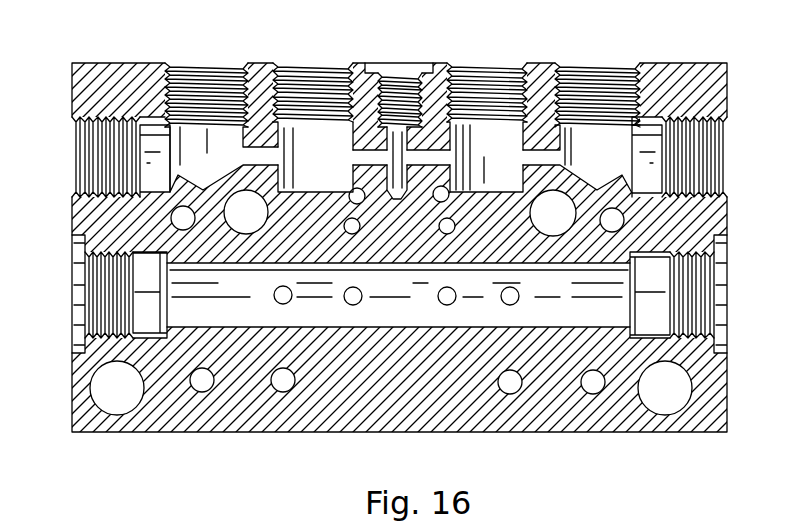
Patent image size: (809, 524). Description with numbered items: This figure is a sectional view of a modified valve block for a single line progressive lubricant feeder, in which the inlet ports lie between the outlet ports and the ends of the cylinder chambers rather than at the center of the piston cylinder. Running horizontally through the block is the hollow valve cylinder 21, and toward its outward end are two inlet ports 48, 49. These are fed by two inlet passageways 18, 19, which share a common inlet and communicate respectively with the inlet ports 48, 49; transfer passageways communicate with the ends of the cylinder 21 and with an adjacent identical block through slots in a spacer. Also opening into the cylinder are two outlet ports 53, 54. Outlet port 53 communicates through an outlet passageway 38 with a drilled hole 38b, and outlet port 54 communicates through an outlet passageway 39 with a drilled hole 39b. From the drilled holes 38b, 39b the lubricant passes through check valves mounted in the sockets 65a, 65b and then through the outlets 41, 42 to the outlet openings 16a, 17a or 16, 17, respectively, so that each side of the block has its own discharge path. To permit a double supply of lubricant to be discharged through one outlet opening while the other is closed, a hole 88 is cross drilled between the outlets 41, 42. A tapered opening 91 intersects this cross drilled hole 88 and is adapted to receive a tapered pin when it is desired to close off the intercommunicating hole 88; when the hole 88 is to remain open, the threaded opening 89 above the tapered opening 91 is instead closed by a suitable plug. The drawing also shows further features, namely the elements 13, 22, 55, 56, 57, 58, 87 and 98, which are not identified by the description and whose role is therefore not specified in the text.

The valve body block 13 is at (720, 434).
The outlet opening 16 is at (188, 80).
The outlet opening 16a is at (92, 132).
The outlet opening 17 is at (583, 82).
The outlet opening 17a is at (713, 153).
The inlet passageway 18 is at (294, 374).
The inlet passageway 19 is at (520, 375).
The hollow valve cylinder 21 is at (598, 315).
The threaded end connection 22 is at (102, 308).
The outlet passageway 38 is at (345, 232).
The drilled hole 38b is at (348, 203).
The outlet passageway 39 is at (453, 232).
The drilled hole 39b is at (449, 201).
The outlet 41 is at (313, 157).
The outlet 42 is at (487, 157).
The inlet port 48 is at (276, 290).
The inlet port 49 is at (517, 290).
The outlet port 53 is at (360, 290).
The outlet port 54 is at (453, 290).
The passage 55 is at (205, 393).
The passage 56 is at (590, 394).
The passage 57 is at (172, 218).
The passage 58 is at (625, 223).
The socket 65a is at (320, 140).
The socket 65b is at (470, 143).
The chamber 87 is at (552, 155).
The cross drilled hole 88 is at (370, 150).
The threaded opening 89 is at (396, 90).
The tapered opening 91 is at (408, 150).
The mounting hole 98 is at (247, 190).